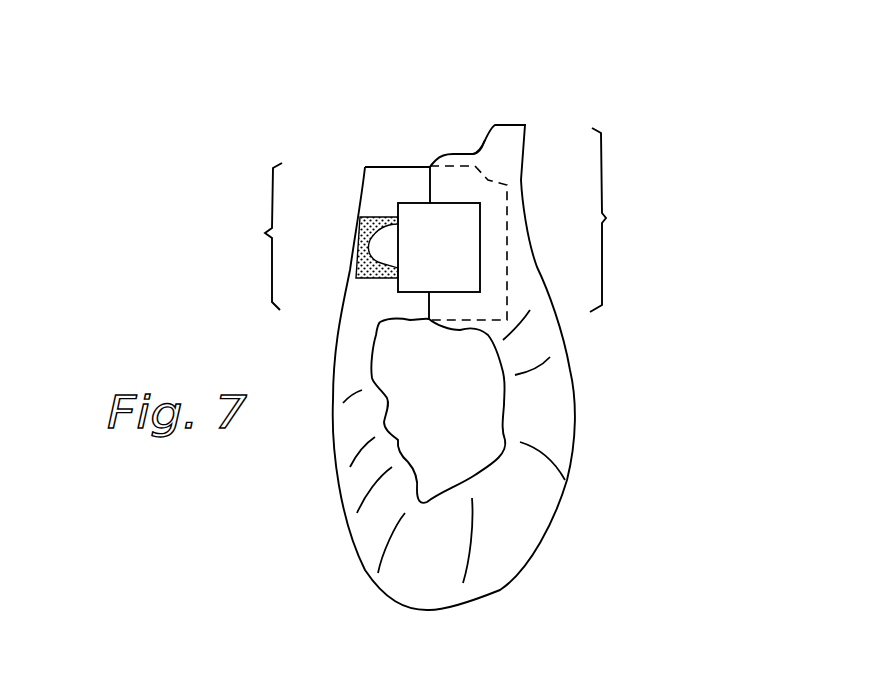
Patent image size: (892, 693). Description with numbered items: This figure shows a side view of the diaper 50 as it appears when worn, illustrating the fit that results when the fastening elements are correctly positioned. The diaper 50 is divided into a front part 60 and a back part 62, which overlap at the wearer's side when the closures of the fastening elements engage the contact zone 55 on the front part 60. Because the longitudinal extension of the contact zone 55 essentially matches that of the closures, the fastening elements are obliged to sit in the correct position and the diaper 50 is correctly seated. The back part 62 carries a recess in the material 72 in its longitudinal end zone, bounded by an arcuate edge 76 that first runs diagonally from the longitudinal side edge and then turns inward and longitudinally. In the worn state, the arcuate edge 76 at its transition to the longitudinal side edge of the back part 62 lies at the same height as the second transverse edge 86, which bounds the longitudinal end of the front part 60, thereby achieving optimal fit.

The diaper 50 is at (430, 187).
The contact zone 55 is at (360, 219).
The front part 60 is at (248, 236).
The back part 62 is at (619, 220).
The recess in the material 72 is at (479, 138).
The arcuate edge 76 is at (479, 149).
The second transverse edge 86 is at (385, 167).